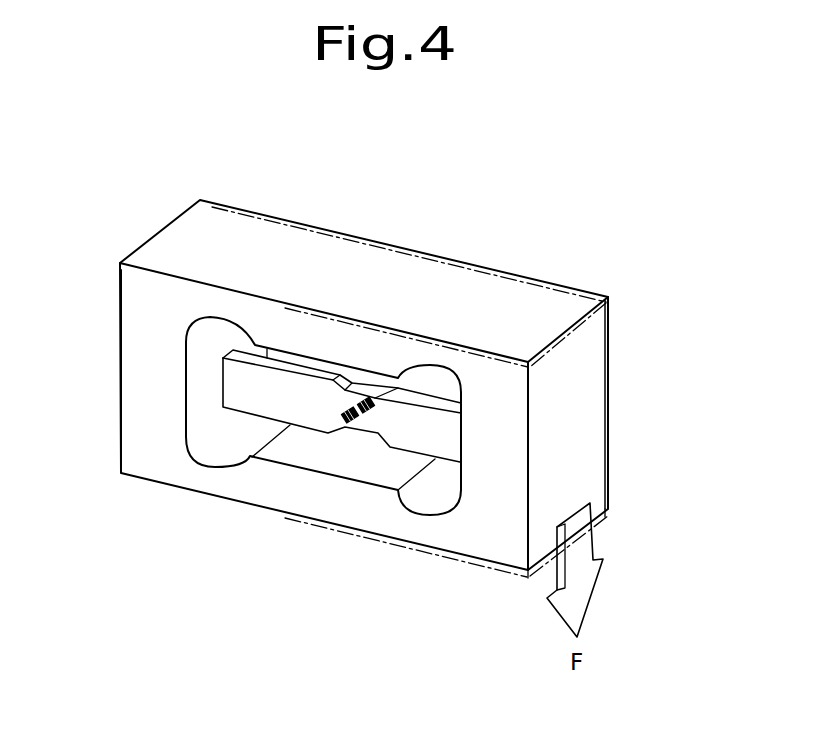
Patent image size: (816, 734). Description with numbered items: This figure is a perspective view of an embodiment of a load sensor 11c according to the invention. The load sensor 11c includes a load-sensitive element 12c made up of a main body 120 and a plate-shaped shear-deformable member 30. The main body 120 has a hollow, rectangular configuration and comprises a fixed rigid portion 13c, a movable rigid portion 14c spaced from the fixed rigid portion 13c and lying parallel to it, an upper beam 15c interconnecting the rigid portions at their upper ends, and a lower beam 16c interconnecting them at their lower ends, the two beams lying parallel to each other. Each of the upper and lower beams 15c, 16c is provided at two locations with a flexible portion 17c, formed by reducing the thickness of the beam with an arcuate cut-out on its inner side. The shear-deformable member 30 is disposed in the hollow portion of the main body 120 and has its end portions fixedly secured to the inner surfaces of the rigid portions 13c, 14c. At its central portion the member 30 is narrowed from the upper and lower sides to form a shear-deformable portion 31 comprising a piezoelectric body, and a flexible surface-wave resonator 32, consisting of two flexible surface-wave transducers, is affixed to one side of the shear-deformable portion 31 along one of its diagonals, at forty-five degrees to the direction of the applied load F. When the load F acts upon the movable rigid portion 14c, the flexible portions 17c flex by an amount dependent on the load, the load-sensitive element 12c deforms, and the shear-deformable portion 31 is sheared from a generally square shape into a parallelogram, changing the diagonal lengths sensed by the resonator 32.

The load sensor 11c is at (218, 192).
The load-sensitive element 12c is at (608, 283).
The fixed rigid portion 13c is at (140, 357).
The movable rigid portion 14c is at (592, 393).
The upper beam 15c is at (380, 258).
The lower beam 16c is at (310, 503).
The flexible portion 17c is at (250, 255).
The main body 120 is at (560, 280).
The plate-shaped shear-deformable member 30 is at (250, 398).
The shear-deformable portion 31 is at (367, 420).
The flexible surface-wave resonator 32 is at (343, 402).